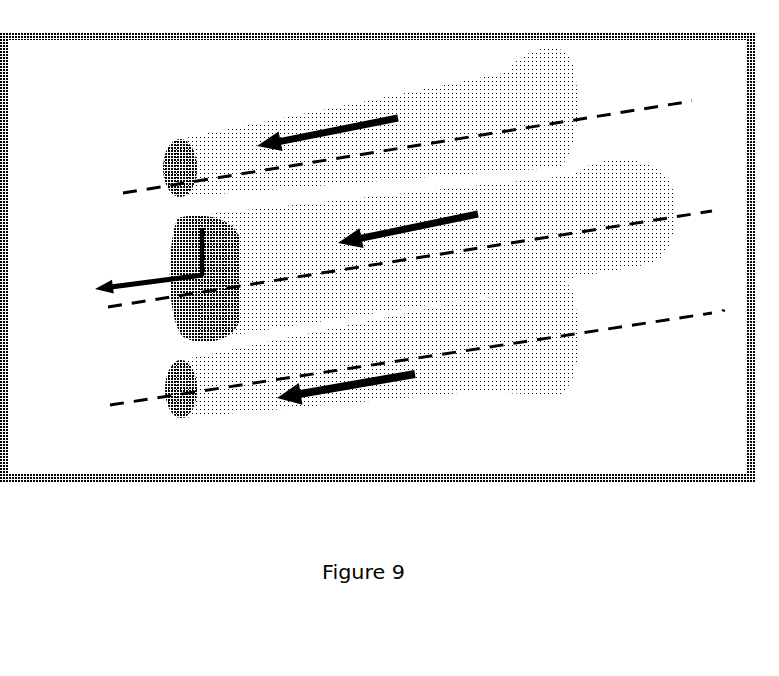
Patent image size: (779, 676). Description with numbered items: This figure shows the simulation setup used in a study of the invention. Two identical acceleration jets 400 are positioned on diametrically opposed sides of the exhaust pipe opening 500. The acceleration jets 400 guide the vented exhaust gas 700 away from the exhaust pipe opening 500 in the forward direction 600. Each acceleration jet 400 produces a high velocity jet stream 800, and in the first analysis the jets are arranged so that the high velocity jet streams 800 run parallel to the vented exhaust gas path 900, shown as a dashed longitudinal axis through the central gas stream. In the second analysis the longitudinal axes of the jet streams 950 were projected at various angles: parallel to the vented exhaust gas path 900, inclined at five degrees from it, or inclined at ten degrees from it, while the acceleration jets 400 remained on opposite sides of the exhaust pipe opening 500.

The acceleration jet 400 is at (420, 122).
The exhaust pipe opening 500 is at (188, 313).
The forward direction 600 is at (183, 272).
The vented exhaust gas 700 is at (377, 258).
The high velocity jet stream 800 is at (378, 257).
The vented exhaust gas path 900 is at (394, 257).
The longitudinal axis of jet stream 950 is at (397, 253).